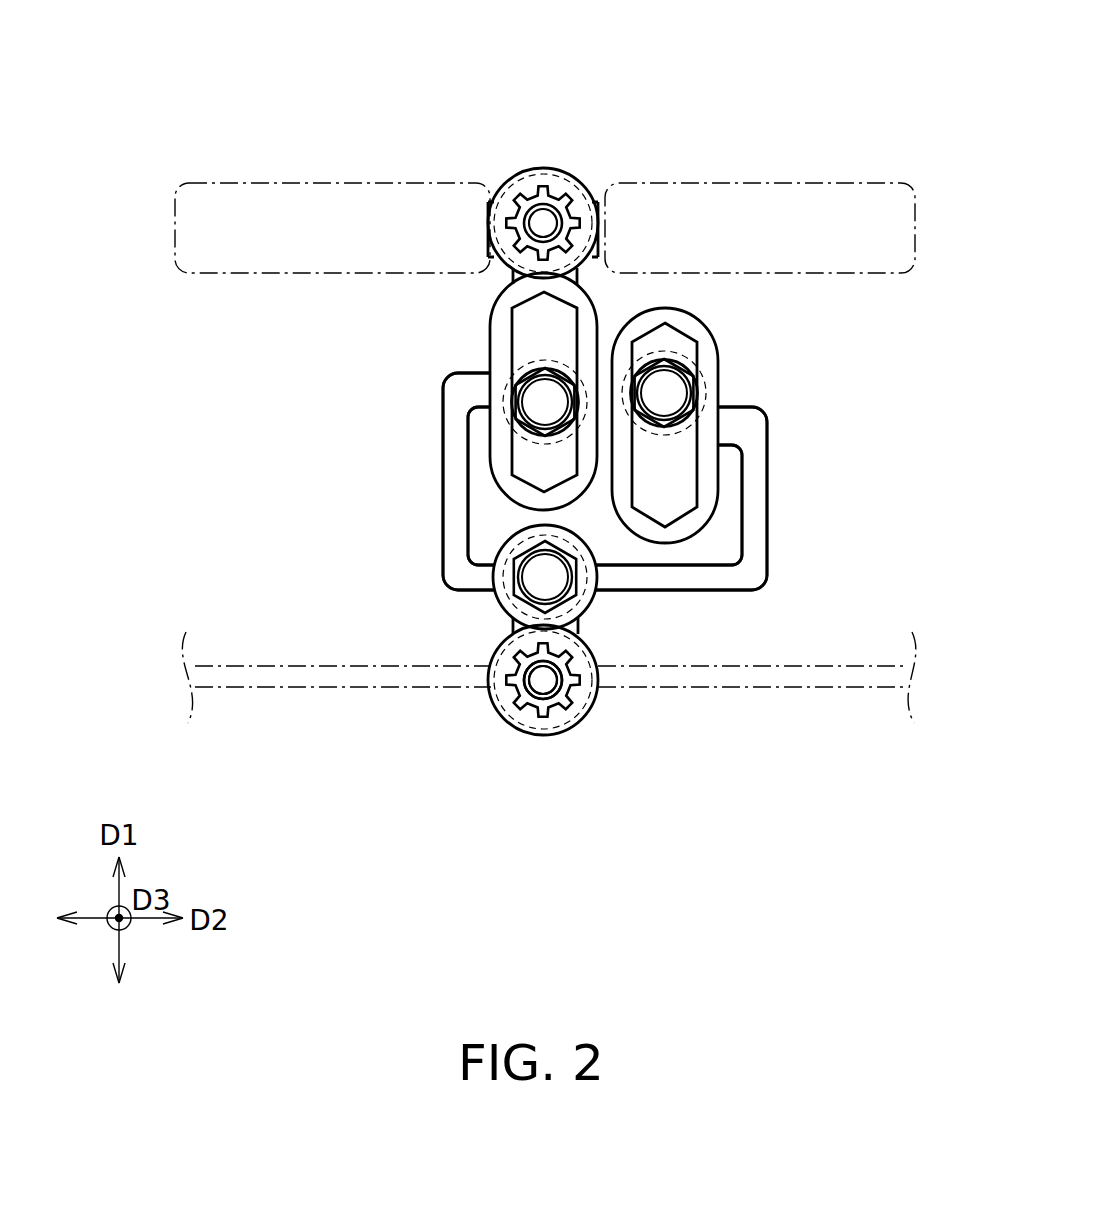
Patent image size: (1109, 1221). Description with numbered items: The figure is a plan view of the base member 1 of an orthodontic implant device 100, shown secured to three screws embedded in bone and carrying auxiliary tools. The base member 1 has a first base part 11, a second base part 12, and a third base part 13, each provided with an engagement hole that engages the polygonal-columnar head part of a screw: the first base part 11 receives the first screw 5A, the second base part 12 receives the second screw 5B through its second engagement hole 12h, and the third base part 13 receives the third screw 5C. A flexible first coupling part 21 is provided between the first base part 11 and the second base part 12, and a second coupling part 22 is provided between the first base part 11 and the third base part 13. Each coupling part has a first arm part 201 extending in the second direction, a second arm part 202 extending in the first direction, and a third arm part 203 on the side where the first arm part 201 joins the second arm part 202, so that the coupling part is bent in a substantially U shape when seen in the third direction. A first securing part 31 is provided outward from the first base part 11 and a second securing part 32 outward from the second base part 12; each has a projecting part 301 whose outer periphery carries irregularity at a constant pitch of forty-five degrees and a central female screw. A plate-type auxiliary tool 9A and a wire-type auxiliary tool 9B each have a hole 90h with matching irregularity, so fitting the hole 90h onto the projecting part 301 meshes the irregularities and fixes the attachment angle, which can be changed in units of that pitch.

The orthodontic implant device 100 is at (834, 143).
The base member 1 is at (731, 358).
The plate-type auxiliary tool 9A is at (238, 195).
The wire-type auxiliary tool 9B is at (285, 667).
The first securing part 31 is at (507, 200).
The second securing part 32 is at (505, 693).
The projecting part 301 is at (543, 192).
The hole 90h is at (560, 204).
The second base part 12 is at (588, 305).
The second engagement hole 12h is at (528, 337).
The third base part 13 is at (700, 326).
The first coupling part 21 is at (447, 467).
The second coupling part 22 is at (763, 497).
The third arm part 203 is at (469, 384).
The second arm part 202 is at (457, 508).
The first arm part 201 is at (480, 588).
The first base part 11 is at (590, 600).
The first screw 5A is at (545, 580).
The second screw 5B is at (545, 402).
The third screw 5C is at (664, 393).